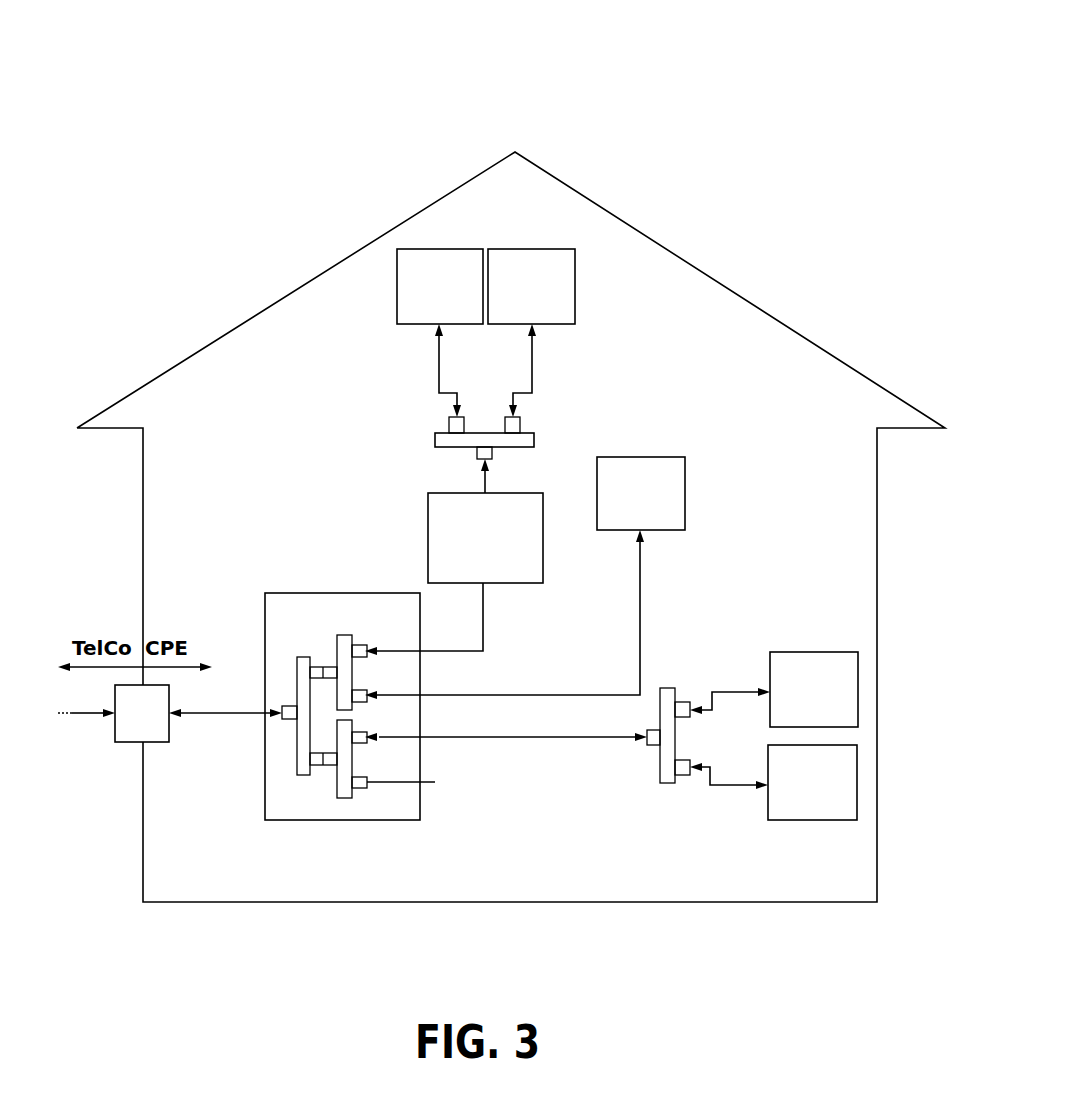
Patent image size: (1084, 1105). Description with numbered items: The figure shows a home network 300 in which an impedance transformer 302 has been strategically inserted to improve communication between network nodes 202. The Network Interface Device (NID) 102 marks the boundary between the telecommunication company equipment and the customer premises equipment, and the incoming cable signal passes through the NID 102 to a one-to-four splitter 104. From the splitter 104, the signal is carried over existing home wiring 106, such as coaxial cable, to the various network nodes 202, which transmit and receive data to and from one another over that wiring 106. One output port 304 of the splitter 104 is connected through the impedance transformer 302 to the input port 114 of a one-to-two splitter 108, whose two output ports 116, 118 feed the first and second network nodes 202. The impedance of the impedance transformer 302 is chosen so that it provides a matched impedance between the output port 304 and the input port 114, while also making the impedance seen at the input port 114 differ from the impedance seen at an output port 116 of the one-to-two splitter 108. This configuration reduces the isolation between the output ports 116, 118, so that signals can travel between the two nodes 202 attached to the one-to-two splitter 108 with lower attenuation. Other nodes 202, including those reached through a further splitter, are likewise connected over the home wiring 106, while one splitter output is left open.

The home network system 300 is at (803, 104).
The Network Interface Device (NID) 102 is at (139, 742).
The 1:4 splitter 104 is at (343, 593).
The existing home wiring 106 is at (439, 370).
The 1:2 splitter 108 is at (427, 455).
The input port 114 is at (487, 453).
The output port 116 is at (453, 427).
The output port 118 is at (513, 427).
The network nodes 202 is at (397, 292).
The impedance transformer 302 is at (427, 538).
The output port 304 is at (363, 647).